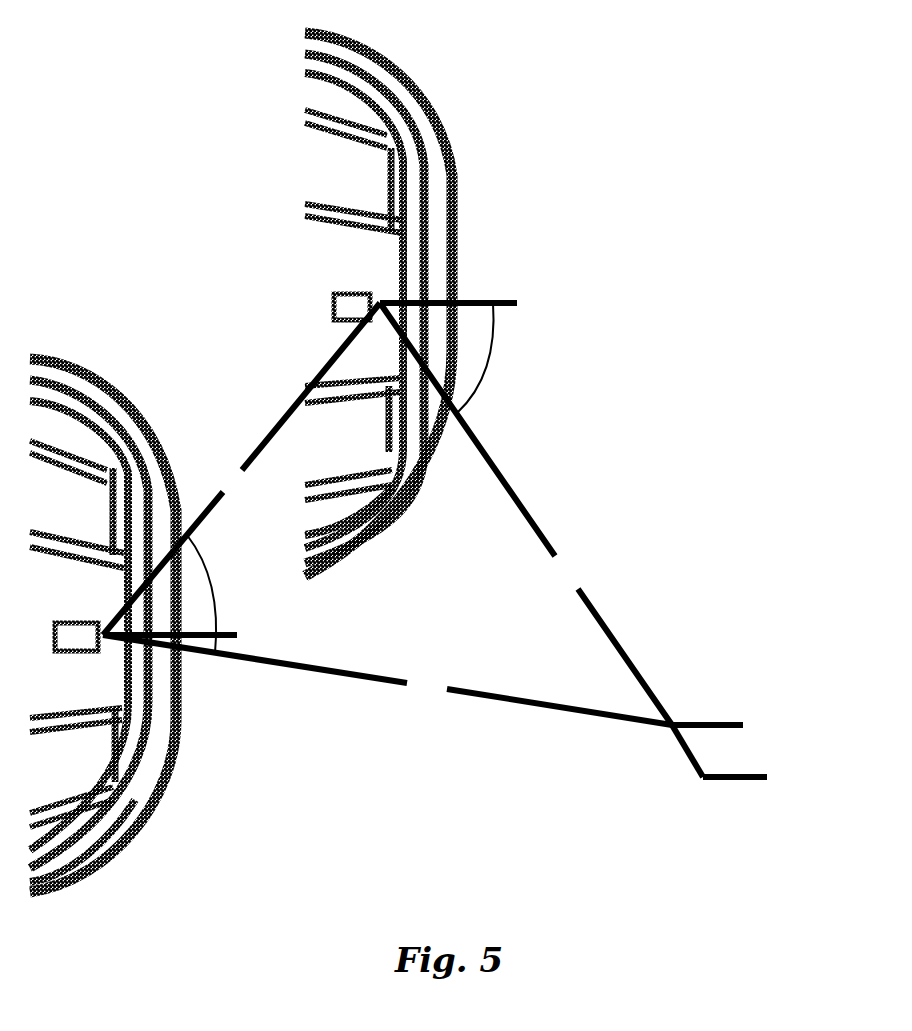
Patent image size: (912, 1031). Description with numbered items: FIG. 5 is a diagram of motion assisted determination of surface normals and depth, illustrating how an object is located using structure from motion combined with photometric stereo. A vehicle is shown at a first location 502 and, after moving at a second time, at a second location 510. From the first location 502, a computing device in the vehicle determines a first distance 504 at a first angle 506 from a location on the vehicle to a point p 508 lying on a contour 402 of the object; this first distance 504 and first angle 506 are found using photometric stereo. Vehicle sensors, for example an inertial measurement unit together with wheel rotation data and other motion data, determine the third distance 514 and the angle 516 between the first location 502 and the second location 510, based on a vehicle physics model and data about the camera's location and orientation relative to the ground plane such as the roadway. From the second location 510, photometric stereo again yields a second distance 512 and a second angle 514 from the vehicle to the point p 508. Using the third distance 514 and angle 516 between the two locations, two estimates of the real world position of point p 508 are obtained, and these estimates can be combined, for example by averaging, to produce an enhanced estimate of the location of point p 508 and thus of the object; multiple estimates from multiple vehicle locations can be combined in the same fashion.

The contour 402 is at (730, 730).
The first location 502 is at (178, 730).
The first distance d1 504 is at (508, 699).
The first angle 506 is at (238, 641).
The point p 508 is at (669, 733).
The second location 510 is at (352, 553).
The second distance d2 512 is at (531, 518).
The distance d3 and second angle 514 is at (257, 451).
The angle 516 is at (230, 576).